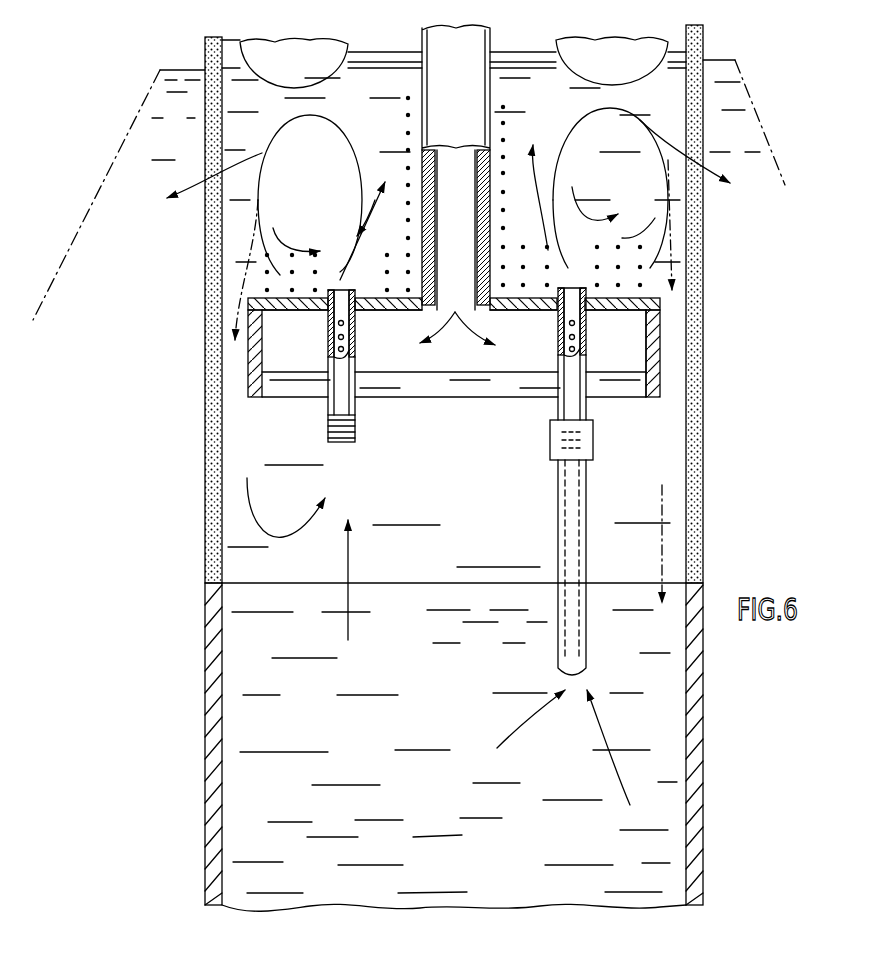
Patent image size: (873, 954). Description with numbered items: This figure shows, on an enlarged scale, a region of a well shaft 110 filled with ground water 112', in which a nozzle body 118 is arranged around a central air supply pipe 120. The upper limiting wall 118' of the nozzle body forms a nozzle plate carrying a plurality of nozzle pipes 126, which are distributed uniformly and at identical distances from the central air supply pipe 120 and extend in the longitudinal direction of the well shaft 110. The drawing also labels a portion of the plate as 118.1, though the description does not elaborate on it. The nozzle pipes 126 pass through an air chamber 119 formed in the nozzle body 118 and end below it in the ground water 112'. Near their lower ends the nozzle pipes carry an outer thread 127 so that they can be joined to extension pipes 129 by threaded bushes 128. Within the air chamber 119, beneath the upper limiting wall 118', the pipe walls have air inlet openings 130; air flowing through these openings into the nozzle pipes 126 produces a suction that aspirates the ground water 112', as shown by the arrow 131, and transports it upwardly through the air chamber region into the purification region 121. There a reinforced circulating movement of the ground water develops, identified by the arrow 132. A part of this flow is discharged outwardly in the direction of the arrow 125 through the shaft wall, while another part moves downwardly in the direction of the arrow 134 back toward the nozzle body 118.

The well shaft 110 is at (240, 718).
The ground water 112' is at (454, 751).
The nozzle body 118 is at (409, 347).
The upper limiting wall 118' is at (700, 340).
The tray top plate 118.1 is at (267, 315).
The air chamber 119 is at (419, 355).
The central air supply pipe 120 is at (422, 58).
The purification region 121 is at (712, 84).
The arrow 125 is at (190, 197).
The nozzle pipes 126 is at (328, 414).
The outer thread 127 is at (346, 445).
The threaded bushes 128 is at (550, 447).
The extension pipes 129 is at (570, 527).
The air inlet openings 130 is at (357, 348).
The arrow 131 is at (348, 556).
The arrow 132 is at (363, 204).
The arrow 134 is at (235, 310).